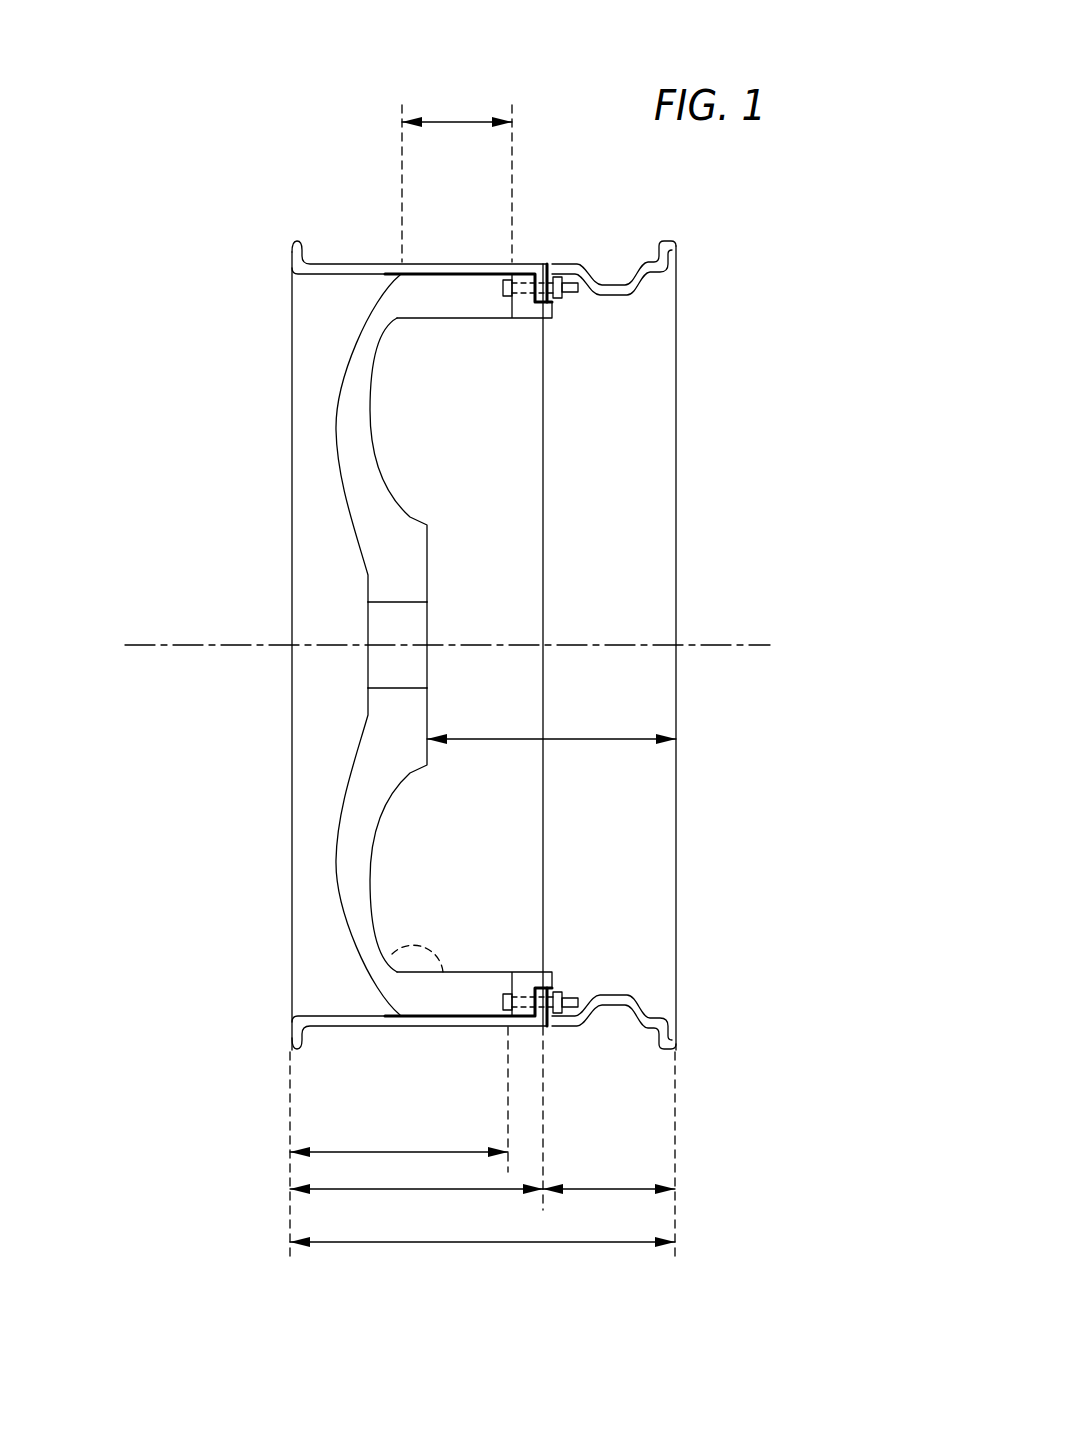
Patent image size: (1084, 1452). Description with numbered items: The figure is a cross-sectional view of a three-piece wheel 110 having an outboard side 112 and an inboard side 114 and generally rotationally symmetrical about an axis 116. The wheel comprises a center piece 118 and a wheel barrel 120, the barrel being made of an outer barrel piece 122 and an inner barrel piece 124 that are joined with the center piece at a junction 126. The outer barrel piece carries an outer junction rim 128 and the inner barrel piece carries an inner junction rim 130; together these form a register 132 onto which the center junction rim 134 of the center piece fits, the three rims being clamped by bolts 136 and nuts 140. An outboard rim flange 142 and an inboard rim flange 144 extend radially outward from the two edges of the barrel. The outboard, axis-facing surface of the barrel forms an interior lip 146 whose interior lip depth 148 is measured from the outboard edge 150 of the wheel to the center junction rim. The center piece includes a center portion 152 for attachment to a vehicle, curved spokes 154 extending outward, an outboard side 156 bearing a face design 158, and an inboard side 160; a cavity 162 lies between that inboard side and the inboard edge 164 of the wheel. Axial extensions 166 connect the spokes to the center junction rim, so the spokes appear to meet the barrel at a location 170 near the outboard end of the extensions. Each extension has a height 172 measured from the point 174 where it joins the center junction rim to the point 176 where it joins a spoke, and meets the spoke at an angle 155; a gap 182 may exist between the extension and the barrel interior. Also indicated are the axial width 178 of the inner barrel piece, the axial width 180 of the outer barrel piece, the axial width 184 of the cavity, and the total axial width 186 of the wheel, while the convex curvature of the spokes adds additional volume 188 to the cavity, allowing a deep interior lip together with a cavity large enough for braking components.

The three-piece wheel 110 is at (310, 122).
The outboard side 112 is at (232, 525).
The inboard side 114 is at (757, 360).
The axis 116 is at (200, 640).
The center piece 118 is at (413, 517).
The wheel barrel 120 is at (448, 238).
The outer barrel piece 122 is at (353, 263).
The inner barrel piece 124 is at (645, 258).
The junction 126 is at (527, 328).
The outer junction rim 128 is at (537, 980).
The inner junction rim 130 is at (553, 977).
The register 132 is at (553, 1037).
The center junction rim 134 is at (527, 973).
The bolts 136 is at (503, 288).
The nuts 140 is at (557, 293).
The outboard rim flange 142 is at (290, 1050).
The inboard rim flange 144 is at (676, 1053).
The interior lip 146 is at (350, 1013).
The interior lip depth 148 is at (325, 1152).
The outboard edge 150 is at (290, 1037).
The center portion 152 is at (387, 728).
The spokes 154 is at (350, 445).
The angle 155 is at (413, 942).
The outboard side of center piece 156 is at (368, 592).
The face design 158 is at (228, 810).
The inboard side of center piece 160 is at (428, 555).
The cavity 162 is at (505, 628).
The inboard edge 164 is at (676, 1020).
The axial extensions 166 is at (440, 988).
The location 170 is at (385, 275).
The height 172 is at (470, 122).
The point 174 is at (512, 318).
The point 176 is at (415, 293).
The axial width of inner piece 178 is at (623, 1188).
The axial width of outer piece 180 is at (340, 1189).
The gap 182 is at (486, 1018).
The axial width of cavity 184 is at (640, 740).
The total axial width 186 is at (333, 1243).
The additional volume 188 is at (383, 888).